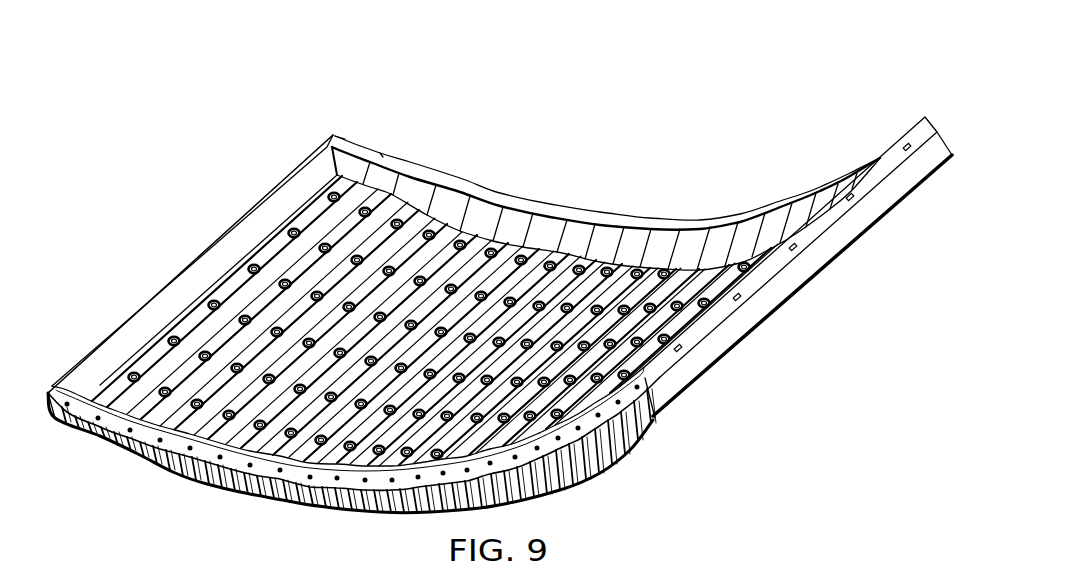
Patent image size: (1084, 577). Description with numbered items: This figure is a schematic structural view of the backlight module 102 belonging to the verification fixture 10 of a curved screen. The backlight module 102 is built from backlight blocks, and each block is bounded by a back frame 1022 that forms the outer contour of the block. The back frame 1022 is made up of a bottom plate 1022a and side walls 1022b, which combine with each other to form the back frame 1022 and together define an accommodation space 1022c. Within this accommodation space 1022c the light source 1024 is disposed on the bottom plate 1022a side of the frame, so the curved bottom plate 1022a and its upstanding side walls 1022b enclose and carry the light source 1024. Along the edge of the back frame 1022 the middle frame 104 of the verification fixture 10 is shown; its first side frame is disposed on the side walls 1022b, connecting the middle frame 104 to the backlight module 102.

The verification fixture 10 is at (203, 134).
The backlight module 102 is at (857, 118).
The middle frame 104 is at (822, 215).
The back frame 1022 is at (913, 164).
The bottom plate 1022a is at (470, 224).
The side walls 1022b is at (372, 158).
The accommodation space 1022c is at (203, 276).
The light source 1024 is at (428, 165).